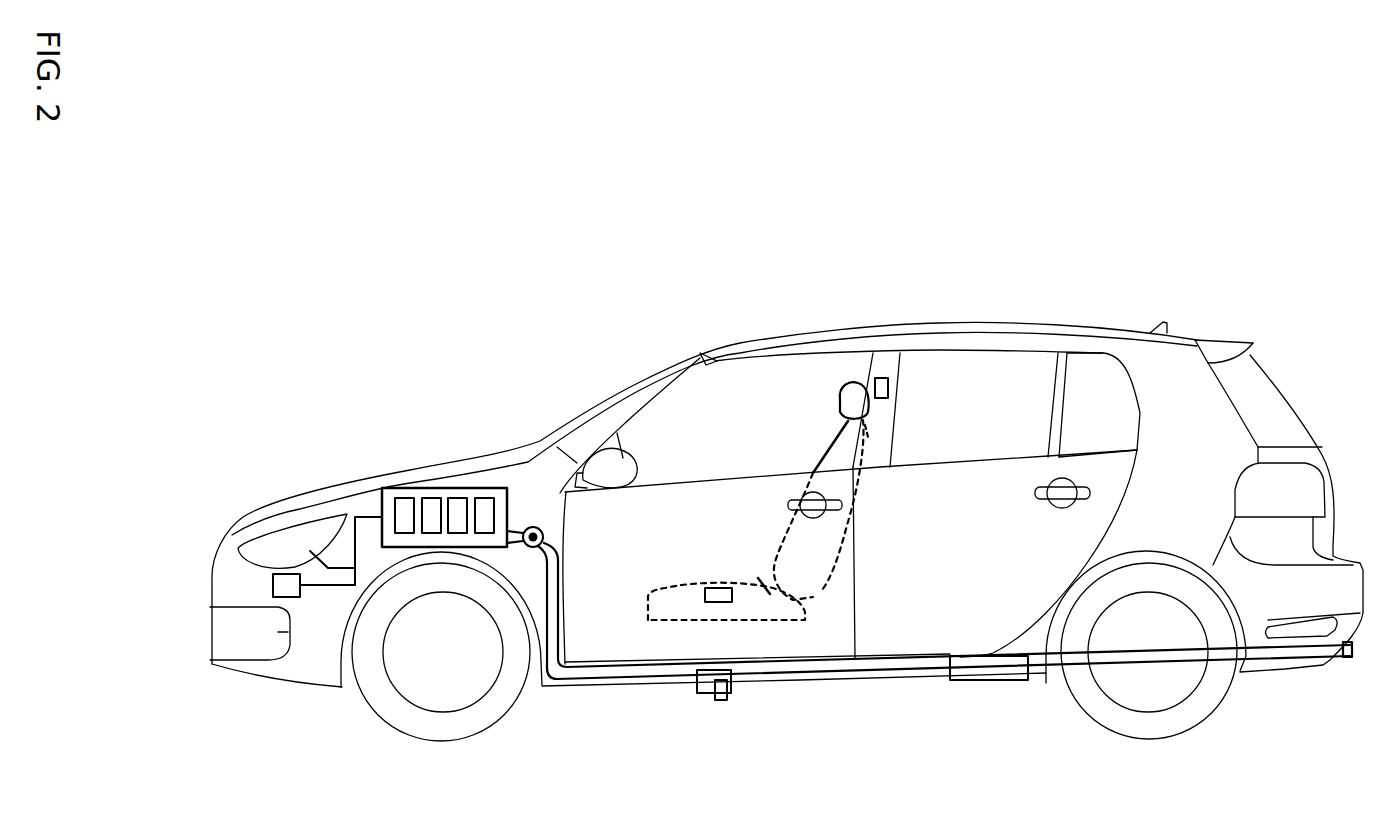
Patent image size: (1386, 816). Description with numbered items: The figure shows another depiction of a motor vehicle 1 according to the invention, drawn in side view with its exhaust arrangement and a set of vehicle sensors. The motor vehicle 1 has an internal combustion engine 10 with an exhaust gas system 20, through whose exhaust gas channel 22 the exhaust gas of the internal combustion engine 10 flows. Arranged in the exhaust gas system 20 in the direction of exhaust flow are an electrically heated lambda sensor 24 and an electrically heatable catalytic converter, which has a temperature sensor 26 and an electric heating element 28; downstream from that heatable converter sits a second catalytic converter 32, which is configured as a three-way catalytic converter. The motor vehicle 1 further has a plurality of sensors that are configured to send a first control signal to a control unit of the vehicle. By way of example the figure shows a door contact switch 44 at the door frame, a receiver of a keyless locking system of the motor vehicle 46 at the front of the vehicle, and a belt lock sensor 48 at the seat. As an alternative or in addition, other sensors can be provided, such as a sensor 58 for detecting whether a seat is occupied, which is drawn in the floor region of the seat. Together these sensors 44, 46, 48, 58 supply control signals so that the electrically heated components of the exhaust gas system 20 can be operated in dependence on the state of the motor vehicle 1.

The motor vehicle 1 is at (501, 296).
The internal combustion engine 10 is at (431, 489).
The exhaust gas system 20 is at (599, 719).
The exhaust gas channel 22 is at (568, 673).
The electrically heated lambda sensor 24 is at (529, 528).
The temperature sensor 26 is at (702, 692).
The electric heating element 28 is at (722, 692).
The second catalytic converter 32 is at (977, 667).
The door contact switch 44 is at (881, 383).
The receiver of a keyless locking system 46 is at (275, 584).
The belt lock sensor 48 is at (763, 573).
The sensor for detecting whether a seat is occupied 58 is at (718, 590).